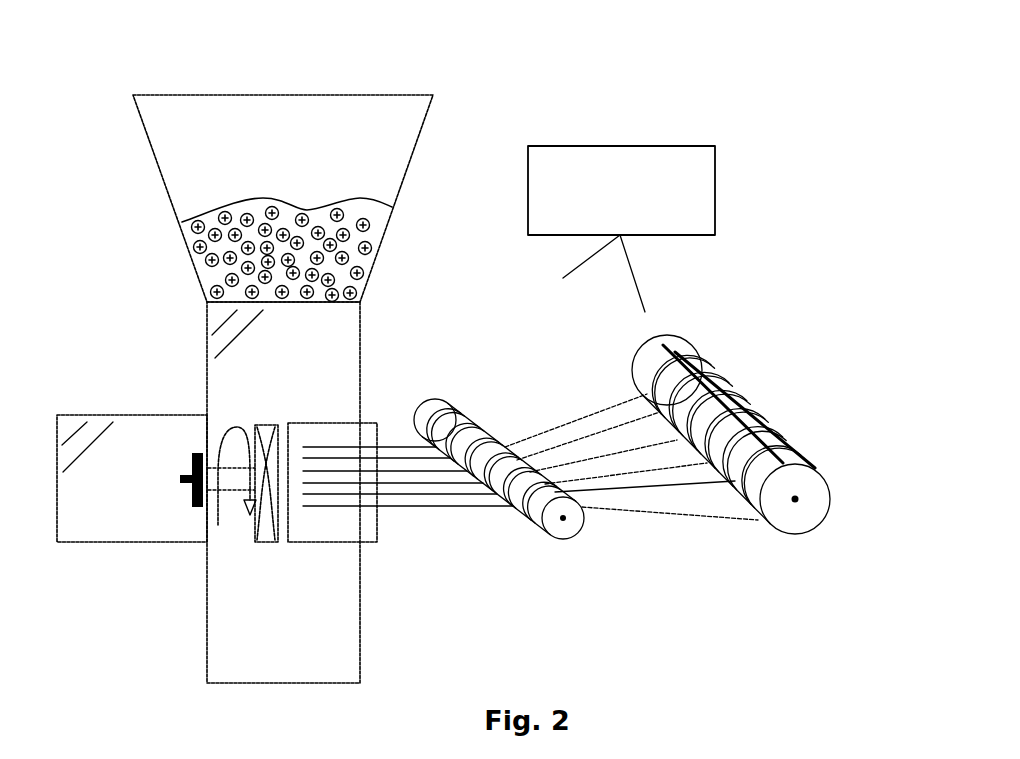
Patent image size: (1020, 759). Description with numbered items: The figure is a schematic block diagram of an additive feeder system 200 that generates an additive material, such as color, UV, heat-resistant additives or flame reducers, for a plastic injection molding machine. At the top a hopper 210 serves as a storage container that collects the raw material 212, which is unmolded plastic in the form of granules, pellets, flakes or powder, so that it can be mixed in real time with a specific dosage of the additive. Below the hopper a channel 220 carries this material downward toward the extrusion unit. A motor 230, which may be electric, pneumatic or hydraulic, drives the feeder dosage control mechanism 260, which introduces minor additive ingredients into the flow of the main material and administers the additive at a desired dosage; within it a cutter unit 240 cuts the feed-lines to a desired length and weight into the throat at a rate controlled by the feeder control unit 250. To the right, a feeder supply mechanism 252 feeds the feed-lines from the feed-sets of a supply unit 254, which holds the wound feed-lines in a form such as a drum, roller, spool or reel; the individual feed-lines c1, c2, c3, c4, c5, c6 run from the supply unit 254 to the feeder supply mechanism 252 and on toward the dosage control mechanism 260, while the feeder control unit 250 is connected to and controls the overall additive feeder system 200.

The additive feeder system 200 is at (617, 100).
The hopper 210 is at (296, 177).
The raw material 212 is at (225, 273).
The feed channel 220 is at (301, 389).
The motor 230 is at (149, 492).
The cutter unit 240 is at (267, 535).
The feeder control unit 250 is at (685, 230).
The feeder supply mechanism 252 is at (798, 503).
The supply unit 254 is at (566, 521).
The feeder dosage control mechanism 260 is at (351, 539).
The channel c1 is at (576, 413).
The channel c2 is at (588, 429).
The channel c3 is at (603, 446).
The channel c4 is at (626, 465).
The channel c5 is at (645, 495).
The channel c6 is at (670, 526).